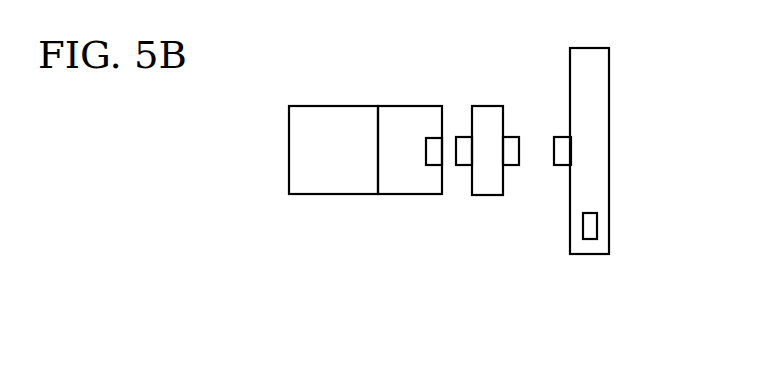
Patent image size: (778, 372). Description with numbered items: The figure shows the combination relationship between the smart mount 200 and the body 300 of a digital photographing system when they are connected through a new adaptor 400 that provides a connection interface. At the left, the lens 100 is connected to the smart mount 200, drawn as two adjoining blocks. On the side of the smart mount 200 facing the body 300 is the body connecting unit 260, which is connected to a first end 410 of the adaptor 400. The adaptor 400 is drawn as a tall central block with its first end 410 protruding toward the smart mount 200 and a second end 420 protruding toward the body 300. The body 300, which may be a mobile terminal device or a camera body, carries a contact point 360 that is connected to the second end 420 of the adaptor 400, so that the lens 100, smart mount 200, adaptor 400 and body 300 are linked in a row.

The lens 100 is at (331, 114).
The smart mount 200 is at (408, 114).
The body connecting unit 260 is at (428, 162).
The body 300 is at (604, 86).
The contact point 360 is at (560, 135).
The adaptor 400 is at (488, 117).
The first end 410 is at (465, 158).
The second end 420 is at (513, 158).